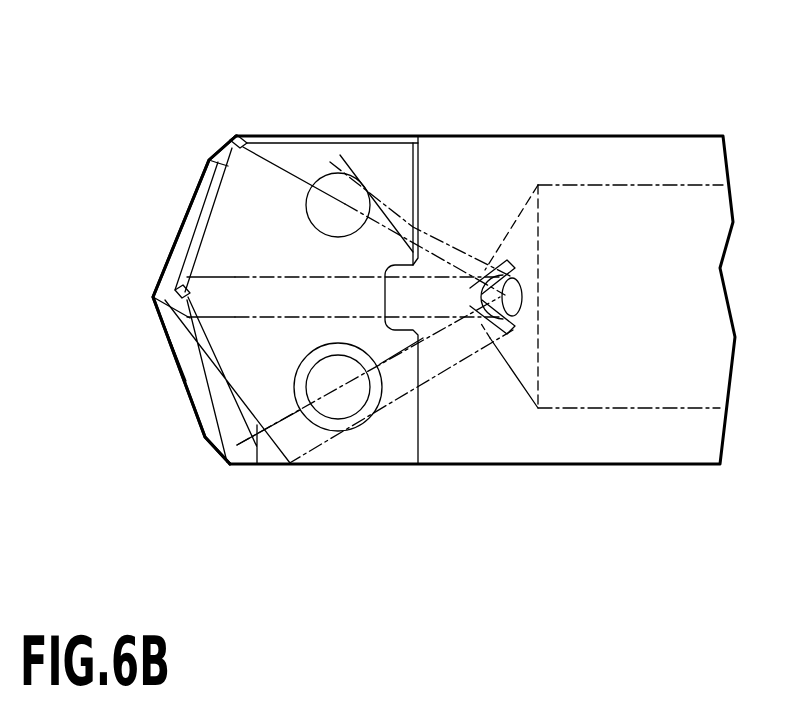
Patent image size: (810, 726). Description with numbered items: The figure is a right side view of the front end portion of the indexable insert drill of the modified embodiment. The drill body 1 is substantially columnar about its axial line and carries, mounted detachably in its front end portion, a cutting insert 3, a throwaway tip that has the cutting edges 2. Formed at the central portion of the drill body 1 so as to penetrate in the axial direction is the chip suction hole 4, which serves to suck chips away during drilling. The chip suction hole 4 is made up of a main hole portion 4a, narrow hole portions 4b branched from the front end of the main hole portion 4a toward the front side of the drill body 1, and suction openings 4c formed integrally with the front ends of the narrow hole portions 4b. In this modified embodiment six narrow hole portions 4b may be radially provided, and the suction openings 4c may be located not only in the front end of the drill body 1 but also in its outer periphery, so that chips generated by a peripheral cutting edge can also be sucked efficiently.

The drill body 1 is at (647, 468).
The cutting edges 2 is at (190, 207).
The cutting insert 3 is at (168, 348).
The chip suction hole 4 is at (518, 577).
The main hole portion 4a is at (558, 410).
The narrow hole portions 4b is at (340, 158).
The suction openings 4c is at (262, 116).